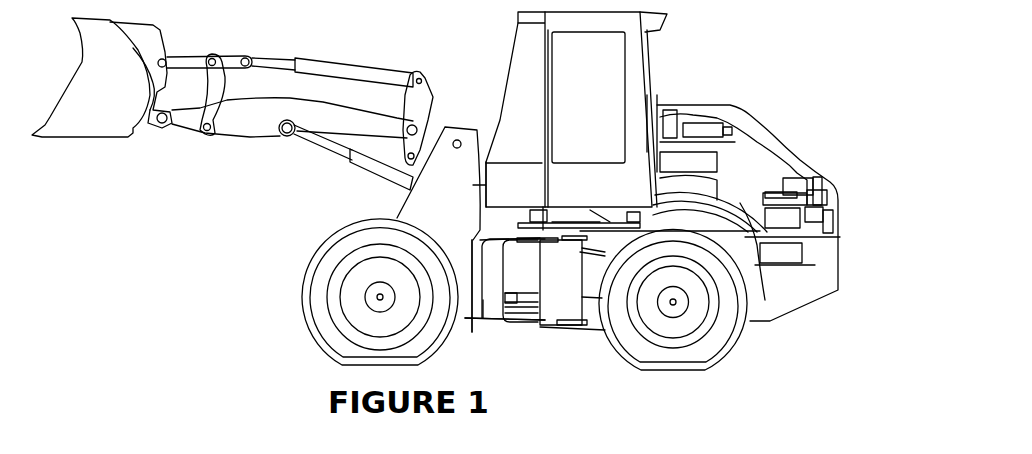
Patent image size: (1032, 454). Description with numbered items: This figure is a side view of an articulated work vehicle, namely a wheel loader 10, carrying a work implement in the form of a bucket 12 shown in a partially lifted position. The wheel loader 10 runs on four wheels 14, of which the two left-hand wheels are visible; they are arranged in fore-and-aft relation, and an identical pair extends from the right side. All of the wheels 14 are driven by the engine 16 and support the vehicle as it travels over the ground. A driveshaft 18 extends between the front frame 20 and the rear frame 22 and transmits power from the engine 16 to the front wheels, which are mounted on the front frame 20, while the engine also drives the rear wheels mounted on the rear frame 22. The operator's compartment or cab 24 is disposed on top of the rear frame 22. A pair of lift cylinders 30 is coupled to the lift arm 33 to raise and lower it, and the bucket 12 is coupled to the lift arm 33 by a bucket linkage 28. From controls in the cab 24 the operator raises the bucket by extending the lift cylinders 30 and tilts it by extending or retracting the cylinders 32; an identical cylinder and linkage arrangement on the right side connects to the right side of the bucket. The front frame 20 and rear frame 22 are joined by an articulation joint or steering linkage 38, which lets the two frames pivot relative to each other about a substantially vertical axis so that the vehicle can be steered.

The wheel loader 10 is at (725, 42).
The bucket 12 is at (118, 110).
The wheels 14 is at (302, 297).
The engine 16 is at (773, 188).
The driveshaft 18 is at (525, 291).
The front frame 20 is at (485, 307).
The rear frame 22 is at (575, 292).
The operator's compartment or cab 24 is at (596, 111).
The bucket linkage 28 is at (228, 166).
The lift cylinders 30 is at (356, 170).
The cylinders 32 is at (338, 60).
The lift arm 33 is at (253, 131).
The articulation joint or steering linkage 38 is at (517, 344).